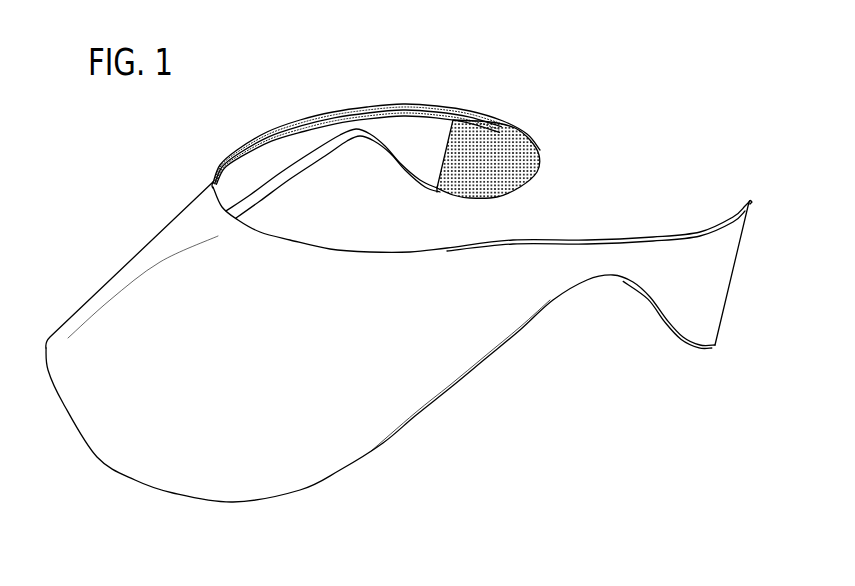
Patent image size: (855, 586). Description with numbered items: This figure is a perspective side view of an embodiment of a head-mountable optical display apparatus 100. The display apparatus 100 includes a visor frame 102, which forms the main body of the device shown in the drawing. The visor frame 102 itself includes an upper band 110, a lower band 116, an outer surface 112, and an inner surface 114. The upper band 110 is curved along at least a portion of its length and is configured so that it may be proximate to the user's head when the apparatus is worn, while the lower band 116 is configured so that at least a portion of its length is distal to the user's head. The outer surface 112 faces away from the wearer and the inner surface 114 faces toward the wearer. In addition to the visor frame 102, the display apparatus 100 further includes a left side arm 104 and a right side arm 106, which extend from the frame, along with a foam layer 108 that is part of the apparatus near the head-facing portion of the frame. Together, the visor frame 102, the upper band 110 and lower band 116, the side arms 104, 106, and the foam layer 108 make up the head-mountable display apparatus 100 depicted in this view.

The display apparatus 100 is at (407, 329).
The visor frame 102 is at (174, 495).
The left side arm 104 is at (738, 262).
The right side arm 106 is at (541, 152).
The foam layer 108 is at (442, 192).
The upper band 110 is at (212, 182).
The outer surface 112 is at (157, 302).
The inner surface 114 is at (231, 186).
The lower band 116 is at (355, 140).